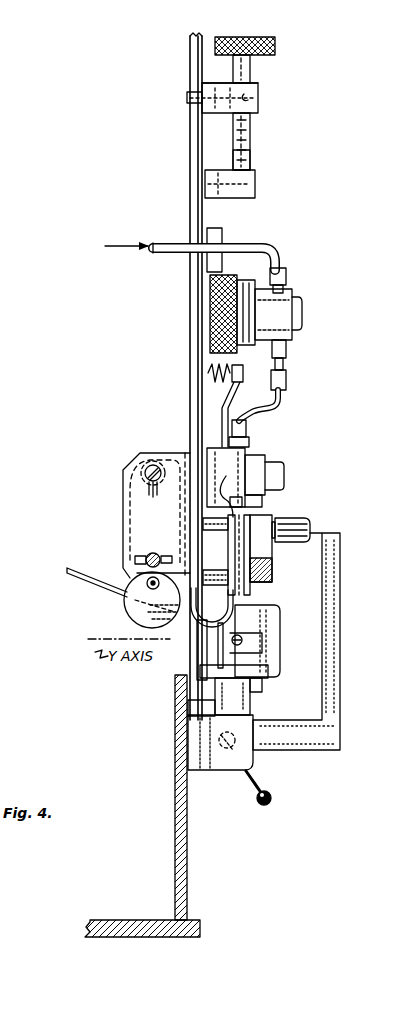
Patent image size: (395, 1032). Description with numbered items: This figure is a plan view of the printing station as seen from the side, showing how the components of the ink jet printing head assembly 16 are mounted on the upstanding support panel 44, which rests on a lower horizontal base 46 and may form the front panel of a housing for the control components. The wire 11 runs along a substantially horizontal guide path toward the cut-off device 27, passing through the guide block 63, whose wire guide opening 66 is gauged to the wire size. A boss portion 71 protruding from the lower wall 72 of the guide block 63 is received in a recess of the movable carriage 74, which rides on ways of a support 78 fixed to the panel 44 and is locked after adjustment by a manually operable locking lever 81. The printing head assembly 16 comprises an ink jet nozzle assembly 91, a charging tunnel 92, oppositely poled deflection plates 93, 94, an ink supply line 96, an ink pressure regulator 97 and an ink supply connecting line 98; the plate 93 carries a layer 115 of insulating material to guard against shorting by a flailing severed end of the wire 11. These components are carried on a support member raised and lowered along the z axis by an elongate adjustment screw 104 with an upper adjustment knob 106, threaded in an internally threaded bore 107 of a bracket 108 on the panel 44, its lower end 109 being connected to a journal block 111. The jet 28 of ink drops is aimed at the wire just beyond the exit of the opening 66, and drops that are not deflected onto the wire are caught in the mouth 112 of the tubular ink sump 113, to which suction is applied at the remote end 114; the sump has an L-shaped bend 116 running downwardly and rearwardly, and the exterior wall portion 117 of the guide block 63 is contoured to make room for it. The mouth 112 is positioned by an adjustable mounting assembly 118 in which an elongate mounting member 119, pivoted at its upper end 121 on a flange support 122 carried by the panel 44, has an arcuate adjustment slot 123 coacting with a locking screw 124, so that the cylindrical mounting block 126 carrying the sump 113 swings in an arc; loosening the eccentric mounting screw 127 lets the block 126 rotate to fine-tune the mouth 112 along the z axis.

The wire 11 is at (238, 634).
The ink jet printing head assembly 16 is at (305, 217).
The cut-off device 27 is at (341, 743).
The jet 28 is at (236, 606).
The support panel 44 is at (187, 878).
The base 46 is at (201, 928).
The guide block 63 is at (281, 610).
The guide opening 66 is at (268, 668).
The boss portion 71 is at (251, 693).
The lower wall 72 is at (263, 682).
The carriage 74 is at (252, 711).
The support 78 is at (230, 772).
The locking lever 81 is at (268, 788).
The ink jet nozzle assembly 91 is at (270, 451).
The charging tunnel 92 is at (285, 472).
The deflection plate 93 is at (276, 528).
The deflection plate 94 is at (226, 490).
The ink supply line 96 is at (289, 252).
The ink pressure regulator 97 is at (303, 312).
The ink supply connecting line 98 is at (283, 398).
The adjustment screw 104 is at (252, 74).
The adjustment knob 106 is at (276, 46).
The internally threaded bore 107 is at (259, 98).
The bracket 108 is at (259, 88).
The lower end 109 is at (254, 172).
The journal block 111 is at (256, 185).
The mouth 112 is at (251, 591).
The ink sump 113 is at (212, 636).
The end 114 is at (66, 569).
The layer 115 is at (274, 567).
The L-shaped bend 116 is at (232, 629).
The exterior wall portion 117 is at (207, 648).
The adjustable mounting assembly 118 is at (121, 491).
The mounting member 119 is at (123, 570).
The upper end 121 is at (141, 468).
The flange support 122 is at (148, 453).
The arcuate adjustment slot 123 is at (167, 556).
The locking screw 124 is at (136, 553).
The mounting block 126 is at (138, 613).
The eccentric mounting screw 127 is at (124, 583).